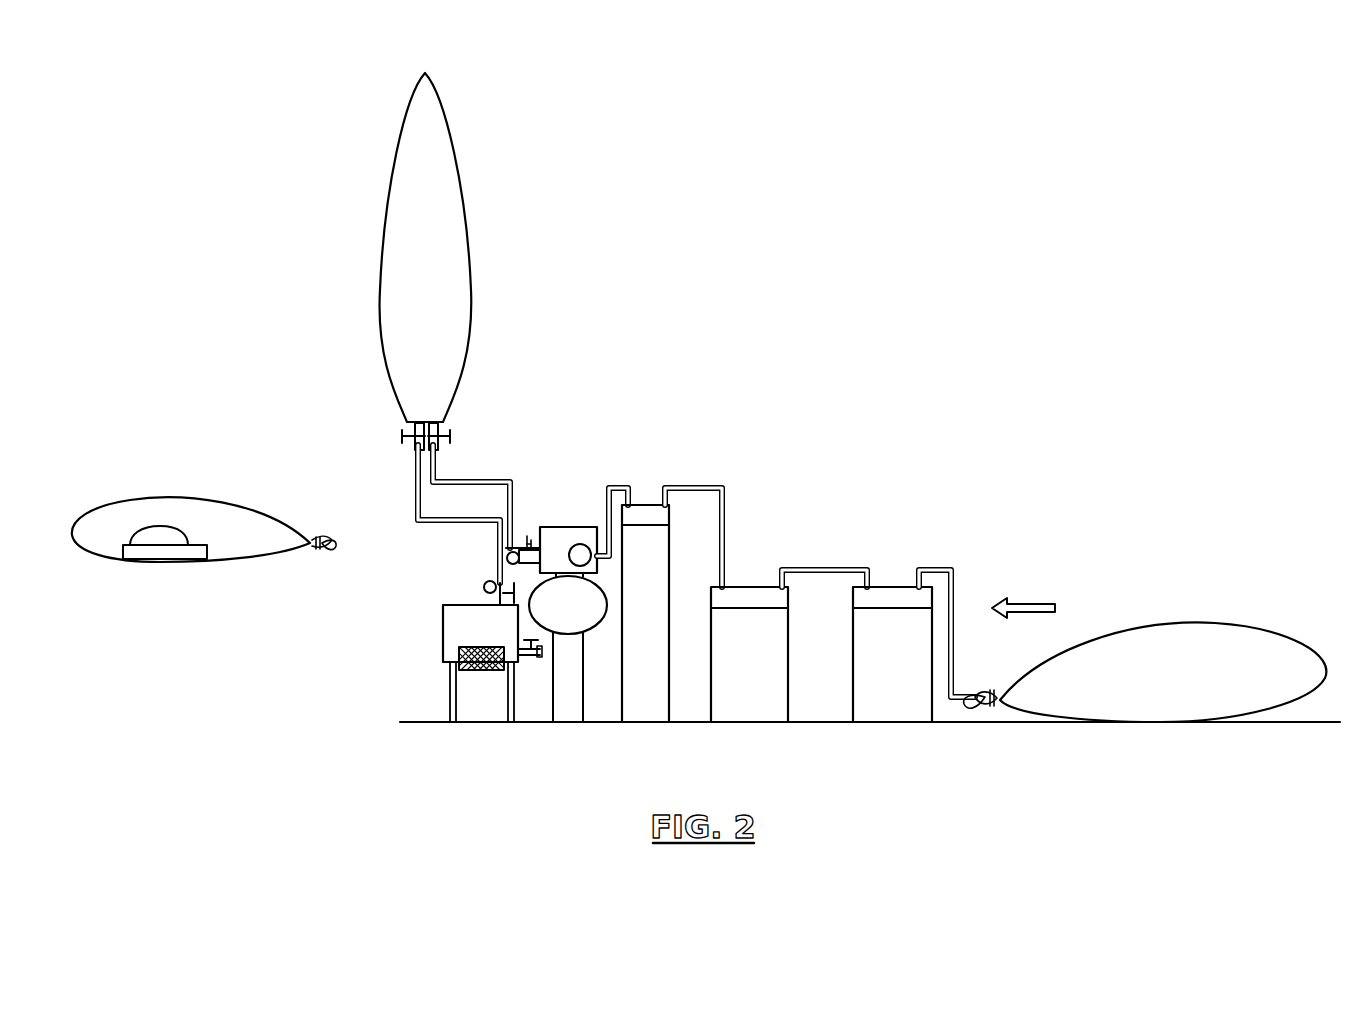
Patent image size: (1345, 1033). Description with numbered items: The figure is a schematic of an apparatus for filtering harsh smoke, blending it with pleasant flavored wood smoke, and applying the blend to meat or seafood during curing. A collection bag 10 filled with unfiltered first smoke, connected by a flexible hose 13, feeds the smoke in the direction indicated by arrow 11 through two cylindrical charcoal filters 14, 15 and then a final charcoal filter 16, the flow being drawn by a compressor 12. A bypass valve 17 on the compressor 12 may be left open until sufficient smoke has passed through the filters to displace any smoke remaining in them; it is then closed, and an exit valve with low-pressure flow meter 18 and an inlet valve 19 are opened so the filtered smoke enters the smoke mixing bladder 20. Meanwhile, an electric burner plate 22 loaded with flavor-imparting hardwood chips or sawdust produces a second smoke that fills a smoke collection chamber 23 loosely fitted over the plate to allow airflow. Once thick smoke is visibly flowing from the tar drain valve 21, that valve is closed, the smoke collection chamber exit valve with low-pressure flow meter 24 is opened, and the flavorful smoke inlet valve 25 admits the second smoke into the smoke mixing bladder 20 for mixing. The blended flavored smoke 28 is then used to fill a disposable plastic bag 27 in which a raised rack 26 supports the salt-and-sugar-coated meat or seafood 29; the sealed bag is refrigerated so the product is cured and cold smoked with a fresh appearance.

The collection bag 10 is at (1164, 683).
The gas flow direction 11 is at (1029, 602).
The compressor 12 is at (592, 527).
The flexible hose 13 is at (931, 567).
The cylindrical charcoal filter 14 is at (877, 670).
The cylindrical charcoal filter 15 is at (734, 670).
The final charcoal filter 16 is at (629, 670).
The bypass valve 17 is at (560, 527).
The exit valve with low-pressure flow meter 18 is at (522, 540).
The inlet valve 19 is at (451, 433).
The smoke mixing bladder 20 is at (408, 285).
The tar drain valve 21 is at (535, 665).
The electric burner plate 22 is at (470, 668).
The smoke collection chamber 23 is at (466, 637).
The smoke collection chamber exit valve with low-pressure flow meter 24 is at (487, 590).
The flavorful smoke inlet valve 25 is at (402, 433).
The raised rack 26 is at (162, 556).
The disposable plastic bag 27 is at (255, 507).
The gas 28 is at (145, 510).
The meat or seafood 29 is at (168, 528).